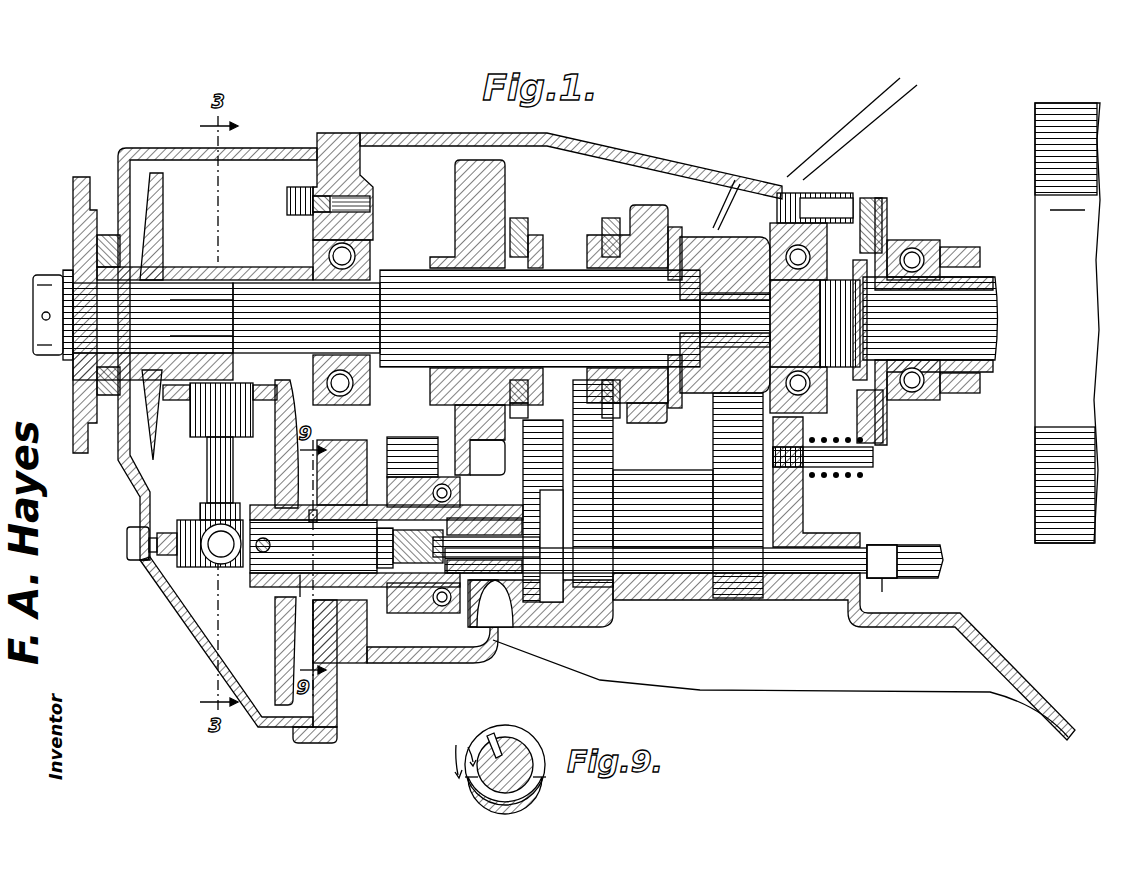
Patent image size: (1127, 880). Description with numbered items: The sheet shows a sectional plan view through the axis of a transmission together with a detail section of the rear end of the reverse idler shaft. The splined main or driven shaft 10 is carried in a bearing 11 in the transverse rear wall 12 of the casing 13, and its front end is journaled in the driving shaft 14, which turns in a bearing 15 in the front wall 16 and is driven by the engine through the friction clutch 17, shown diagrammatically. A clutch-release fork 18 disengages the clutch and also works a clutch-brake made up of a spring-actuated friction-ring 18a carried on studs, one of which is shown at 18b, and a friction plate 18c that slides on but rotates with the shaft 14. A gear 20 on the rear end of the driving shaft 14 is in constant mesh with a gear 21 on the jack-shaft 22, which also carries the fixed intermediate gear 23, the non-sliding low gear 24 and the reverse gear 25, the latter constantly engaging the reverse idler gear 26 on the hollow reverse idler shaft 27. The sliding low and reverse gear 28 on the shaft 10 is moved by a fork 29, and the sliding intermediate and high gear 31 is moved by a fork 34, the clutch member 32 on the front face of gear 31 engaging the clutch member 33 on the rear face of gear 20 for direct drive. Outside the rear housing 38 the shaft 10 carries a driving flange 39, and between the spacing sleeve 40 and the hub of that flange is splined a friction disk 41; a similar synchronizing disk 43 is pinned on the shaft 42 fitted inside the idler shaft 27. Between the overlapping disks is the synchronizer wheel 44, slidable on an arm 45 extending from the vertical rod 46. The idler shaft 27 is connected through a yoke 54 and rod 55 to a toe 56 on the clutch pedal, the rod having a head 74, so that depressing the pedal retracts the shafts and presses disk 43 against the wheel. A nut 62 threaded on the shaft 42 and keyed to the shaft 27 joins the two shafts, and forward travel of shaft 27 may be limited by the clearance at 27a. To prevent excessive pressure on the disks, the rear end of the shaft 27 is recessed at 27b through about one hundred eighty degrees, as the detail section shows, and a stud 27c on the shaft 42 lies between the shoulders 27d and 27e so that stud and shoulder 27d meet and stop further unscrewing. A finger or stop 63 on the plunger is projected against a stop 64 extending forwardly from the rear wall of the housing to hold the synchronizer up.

In FIG. 1, the main or driven shaft 10 is at (570, 270).
In FIG. 1, the bearing 11 is at (372, 232).
In FIG. 1, the transverse rear wall 12 is at (362, 165).
In FIG. 1, the casing 13 is at (422, 133).
In FIG. 1, the driving shaft 14 is at (905, 270).
In FIG. 1, the bearing 15 is at (855, 420).
In FIG. 1, the front wall 16 is at (803, 515).
In FIG. 1, the friction clutch 17 is at (1035, 497).
In FIG. 1, the clutch-release fork 18 is at (962, 247).
In FIG. 1, the spring-actuated friction-ring 18a is at (870, 198).
In FIG. 1, the stud 18b is at (873, 460).
In FIG. 1, the friction plate 18c is at (887, 205).
In FIG. 1, the gear 20 is at (752, 237).
In FIG. 1, the gear 21 is at (713, 445).
In FIG. 1, the jack-shaft or countershaft 22 is at (663, 509).
In FIG. 1, the intermediate gear 23 is at (613, 447).
In FIG. 1, the low gear 24 is at (545, 420).
In FIG. 1, the reverse gear 25 is at (418, 440).
In FIG. 1, the reverse idler gear 26 is at (395, 477).
In FIG. 1, the reverse idler shaft 27 is at (490, 600).
In FIG. 9, the reverse idler shaft 27 is at (540, 800).
In FIG. 1, the clearance point 27a is at (466, 590).
In FIG. 1, the recess 27b is at (300, 590).
In FIG. 9, the recess 27b is at (525, 736).
In FIG. 1, the stud 27c is at (311, 524).
In FIG. 9, the stud 27c is at (490, 738).
In FIG. 9, the shoulder 27d is at (468, 780).
In FIG. 9, the shoulder 27e is at (540, 780).
In FIG. 1, the sliding low and reverse gear 28 is at (505, 186).
In FIG. 1, the fork 29 is at (530, 230).
In FIG. 1, the sliding intermediate and high gear 31 is at (656, 205).
In FIG. 1, the clutch member 32 is at (676, 227).
In FIG. 1, the clutch member 33 is at (737, 180).
In FIG. 1, the fork 34 is at (608, 216).
In FIG. 1, the rear housing 38 is at (272, 148).
In FIG. 1, the driving flange 39 is at (75, 226).
In FIG. 1, the spacing sleeve 40 is at (265, 267).
In FIG. 1, the friction disk 41 is at (165, 218).
In FIG. 1, the shaft 42 is at (395, 546).
In FIG. 9, the shaft 42 is at (533, 762).
In FIG. 1, the synchronizing disk 43 is at (290, 378).
In FIG. 1, the synchronizing wheel 44 is at (228, 385).
In FIG. 1, the arm 45 is at (207, 473).
In FIG. 1, the vertical rod 46 is at (218, 555).
In FIG. 1, the yoke 54 is at (552, 602).
In FIG. 1, the rod 55 is at (655, 575).
In FIG. 1, the toe 56 is at (912, 552).
In FIG. 1, the nut 62 is at (407, 588).
In FIG. 1, the finger or stop 63 is at (168, 533).
In FIG. 1, the stop 64 is at (175, 600).
In FIG. 1, the head 74 is at (886, 596).